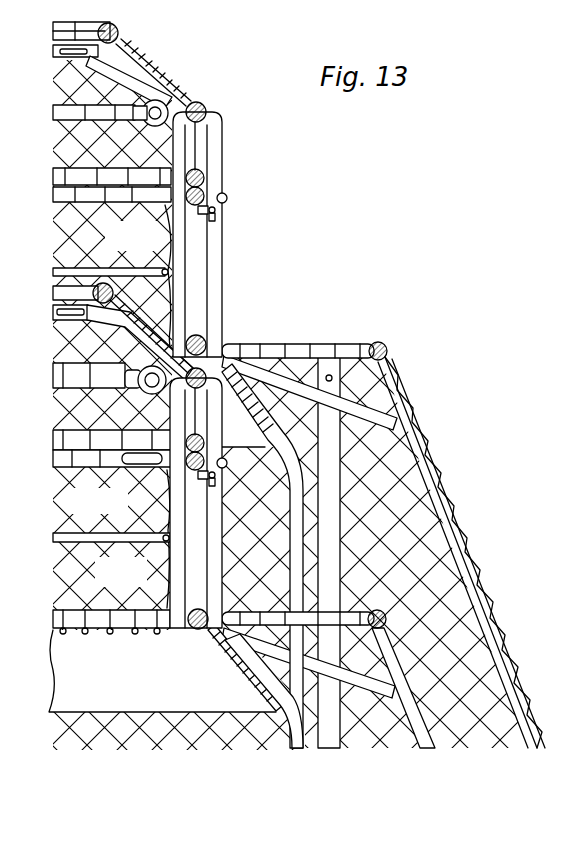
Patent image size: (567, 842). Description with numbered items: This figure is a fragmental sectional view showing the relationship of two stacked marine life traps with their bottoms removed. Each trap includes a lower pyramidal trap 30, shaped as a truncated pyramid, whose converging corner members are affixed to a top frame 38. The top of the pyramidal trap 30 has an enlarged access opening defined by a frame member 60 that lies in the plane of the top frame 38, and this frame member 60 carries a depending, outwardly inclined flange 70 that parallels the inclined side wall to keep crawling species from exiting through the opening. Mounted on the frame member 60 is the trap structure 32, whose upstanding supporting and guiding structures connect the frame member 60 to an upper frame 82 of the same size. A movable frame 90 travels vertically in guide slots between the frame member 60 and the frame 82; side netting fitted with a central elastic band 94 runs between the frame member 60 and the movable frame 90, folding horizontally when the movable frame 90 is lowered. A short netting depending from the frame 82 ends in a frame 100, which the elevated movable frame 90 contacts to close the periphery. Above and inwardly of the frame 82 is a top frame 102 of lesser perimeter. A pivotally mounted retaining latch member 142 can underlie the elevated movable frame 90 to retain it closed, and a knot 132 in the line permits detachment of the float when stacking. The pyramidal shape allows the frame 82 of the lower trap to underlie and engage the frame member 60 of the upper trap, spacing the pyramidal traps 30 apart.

The pyramidal trap 30 is at (458, 500).
The trap structure 32 is at (232, 556).
The top frame 38 is at (386, 350).
The frame member 60 is at (206, 340).
The depending and outwardly inclined flange 70 is at (130, 682).
The frame 82 is at (206, 108).
The movable frame 90 is at (228, 198).
The elastic band 94 is at (112, 345).
The frame 100 is at (200, 182).
The top frame 102 is at (120, 32).
The knot 132 is at (230, 221).
The retaining latch member 142 is at (202, 215).